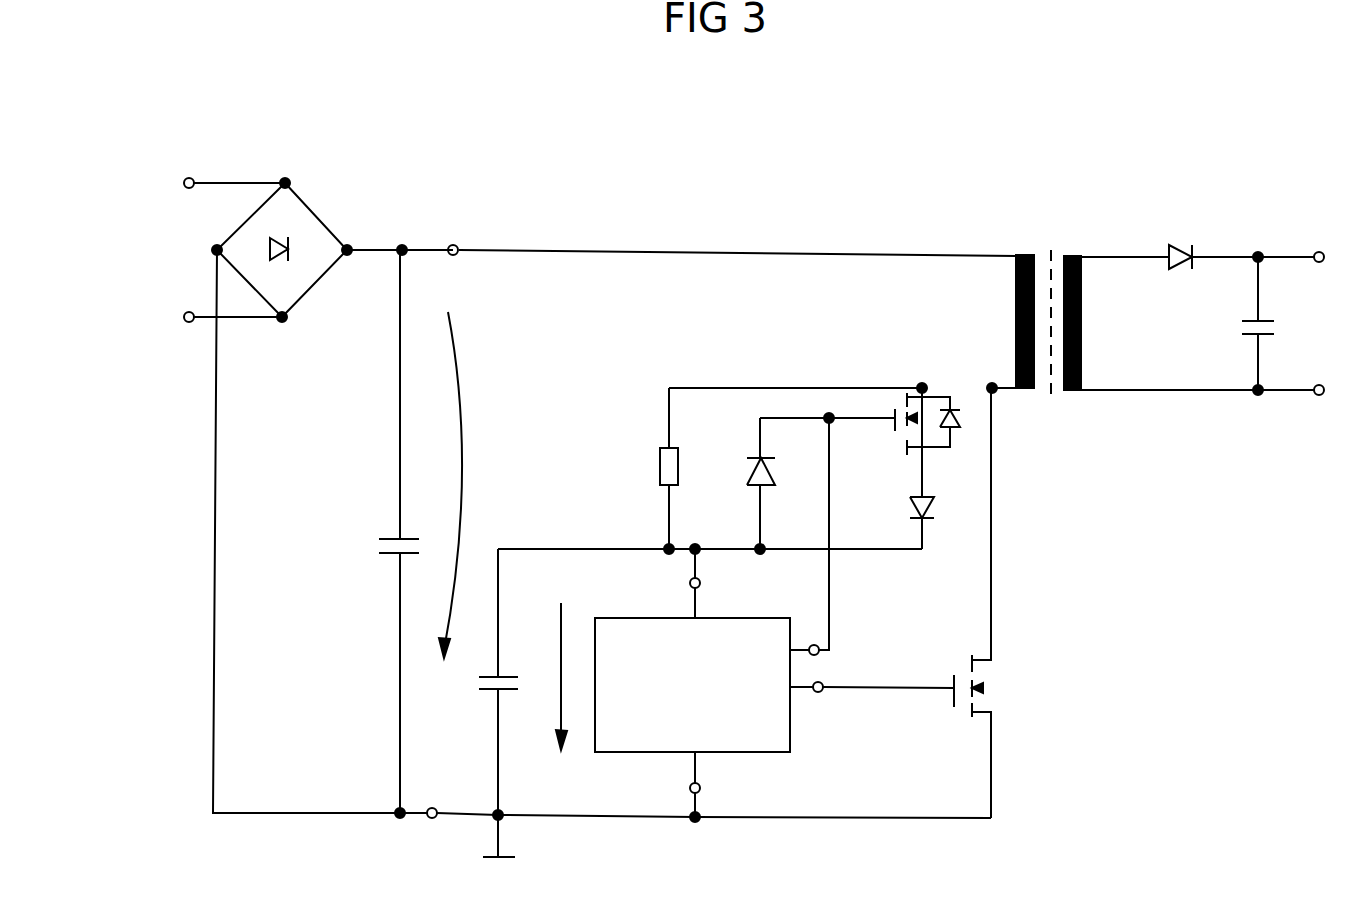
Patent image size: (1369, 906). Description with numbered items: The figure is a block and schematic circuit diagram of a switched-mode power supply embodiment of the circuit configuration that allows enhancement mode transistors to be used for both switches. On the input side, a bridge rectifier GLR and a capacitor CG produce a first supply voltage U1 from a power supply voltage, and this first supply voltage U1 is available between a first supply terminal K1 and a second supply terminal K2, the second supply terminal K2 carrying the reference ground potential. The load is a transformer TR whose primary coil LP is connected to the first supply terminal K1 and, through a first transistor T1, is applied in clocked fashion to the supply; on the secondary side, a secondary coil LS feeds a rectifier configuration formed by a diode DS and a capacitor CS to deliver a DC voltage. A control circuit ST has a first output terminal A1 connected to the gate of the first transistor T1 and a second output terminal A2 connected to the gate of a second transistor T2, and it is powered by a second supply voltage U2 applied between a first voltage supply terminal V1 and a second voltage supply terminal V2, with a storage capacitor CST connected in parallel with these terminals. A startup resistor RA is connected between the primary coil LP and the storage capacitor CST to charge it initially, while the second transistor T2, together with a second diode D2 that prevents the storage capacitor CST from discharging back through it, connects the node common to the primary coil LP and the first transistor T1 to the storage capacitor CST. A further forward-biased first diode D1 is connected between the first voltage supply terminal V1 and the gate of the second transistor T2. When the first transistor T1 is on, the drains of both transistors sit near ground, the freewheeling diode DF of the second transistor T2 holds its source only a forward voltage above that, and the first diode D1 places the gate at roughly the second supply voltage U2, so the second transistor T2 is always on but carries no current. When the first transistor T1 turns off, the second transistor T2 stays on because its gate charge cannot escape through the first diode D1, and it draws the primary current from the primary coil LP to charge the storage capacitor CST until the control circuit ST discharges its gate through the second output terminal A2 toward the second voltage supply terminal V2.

The bridge rectifier GLR is at (268, 234).
The first supply terminal K1 is at (454, 231).
The second supply terminal K2 is at (437, 830).
The capacitor CG is at (378, 531).
The first supply voltage U1 is at (474, 485).
The storage capacitor CST is at (468, 703).
The second supply voltage U2 is at (540, 676).
The startup resistor RA is at (766, 468).
The first diode D1 is at (804, 481).
The second diode D2 is at (899, 498).
The control circuit ST is at (692, 685).
The first voltage supply terminal V1 is at (718, 583).
The second voltage supply terminal V2 is at (718, 784).
The first output terminal A1 is at (872, 707).
The second output terminal A2 is at (810, 536).
The second transistor T2 is at (897, 400).
The freewheeling diode DF is at (961, 421).
The first transistor T1 is at (982, 603).
The transformer TR is at (1041, 303).
The primary coil LP is at (975, 322).
The secondary coil LS is at (1106, 322).
The secondary-side rectifier diode DS is at (1175, 238).
The secondary-side rectifier capacitor CS is at (1278, 323).